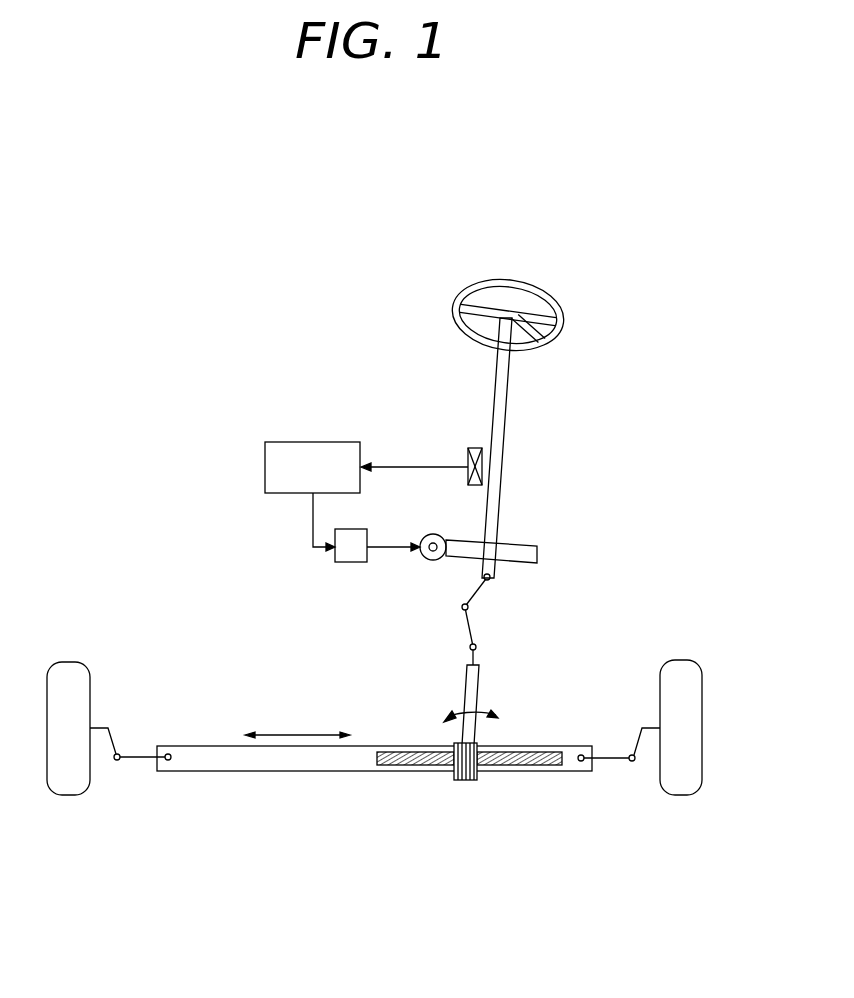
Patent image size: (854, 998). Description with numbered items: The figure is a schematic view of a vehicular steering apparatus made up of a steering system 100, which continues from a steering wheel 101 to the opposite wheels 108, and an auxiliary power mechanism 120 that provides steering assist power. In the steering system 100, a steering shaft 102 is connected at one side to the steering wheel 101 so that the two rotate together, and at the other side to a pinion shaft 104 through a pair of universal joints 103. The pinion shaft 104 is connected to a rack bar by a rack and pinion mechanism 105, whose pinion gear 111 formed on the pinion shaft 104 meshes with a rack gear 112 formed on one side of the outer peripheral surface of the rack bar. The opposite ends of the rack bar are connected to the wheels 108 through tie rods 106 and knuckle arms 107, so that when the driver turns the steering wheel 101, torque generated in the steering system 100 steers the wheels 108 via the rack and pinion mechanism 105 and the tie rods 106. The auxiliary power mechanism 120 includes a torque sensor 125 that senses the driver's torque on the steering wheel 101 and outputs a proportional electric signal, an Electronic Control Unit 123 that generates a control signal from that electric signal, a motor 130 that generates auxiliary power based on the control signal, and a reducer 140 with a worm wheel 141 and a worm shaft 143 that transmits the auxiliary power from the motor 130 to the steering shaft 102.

The steering system 100 is at (262, 284).
The steering wheel 101 is at (453, 310).
The steering shaft 102 is at (508, 408).
The universal joints 103 is at (476, 600).
The pinion shaft 104 is at (462, 692).
The rack and pinion mechanism 105 is at (374, 821).
The tie rods 106 is at (615, 757).
The knuckle arms 107 is at (100, 728).
The wheels 108 is at (690, 668).
The pinion gear 111 is at (446, 794).
The rack gear 112 is at (520, 766).
The auxiliary power mechanism 120 is at (249, 426).
The Electronic Control Unit (ECU) 123 is at (333, 441).
The torque sensor 125 is at (470, 447).
The motor 130 is at (345, 564).
The reducer 140 is at (576, 531).
The worm wheel 141 is at (528, 540).
The worm shaft 143 is at (433, 533).